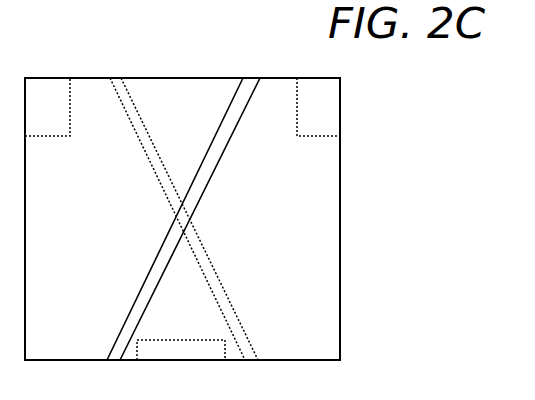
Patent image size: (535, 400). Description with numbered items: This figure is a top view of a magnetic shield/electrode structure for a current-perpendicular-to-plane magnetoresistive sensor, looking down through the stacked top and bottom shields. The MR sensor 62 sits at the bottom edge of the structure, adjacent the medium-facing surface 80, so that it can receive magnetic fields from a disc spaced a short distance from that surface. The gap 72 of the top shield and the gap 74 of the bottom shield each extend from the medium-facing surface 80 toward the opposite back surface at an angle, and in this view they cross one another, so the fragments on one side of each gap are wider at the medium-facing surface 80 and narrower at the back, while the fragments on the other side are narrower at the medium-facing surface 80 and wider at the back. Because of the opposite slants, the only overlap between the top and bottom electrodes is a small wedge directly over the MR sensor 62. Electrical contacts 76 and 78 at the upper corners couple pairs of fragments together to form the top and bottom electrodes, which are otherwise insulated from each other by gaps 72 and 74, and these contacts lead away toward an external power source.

The MR sensor 62 is at (180, 350).
The gap 72 is at (248, 90).
The gap 74 is at (125, 97).
The electrical contact 76 is at (325, 108).
The electrical contact 78 is at (50, 100).
The medium-facing surface 80 is at (342, 359).